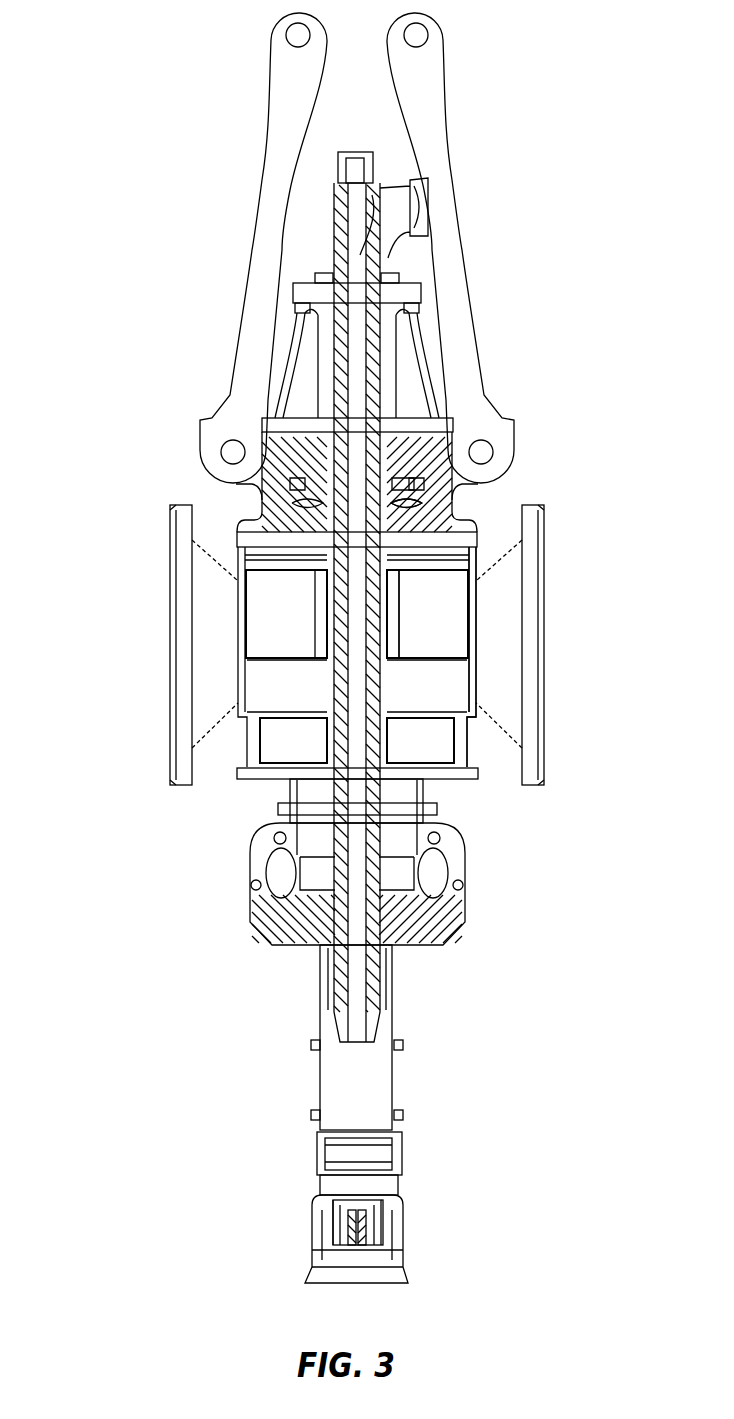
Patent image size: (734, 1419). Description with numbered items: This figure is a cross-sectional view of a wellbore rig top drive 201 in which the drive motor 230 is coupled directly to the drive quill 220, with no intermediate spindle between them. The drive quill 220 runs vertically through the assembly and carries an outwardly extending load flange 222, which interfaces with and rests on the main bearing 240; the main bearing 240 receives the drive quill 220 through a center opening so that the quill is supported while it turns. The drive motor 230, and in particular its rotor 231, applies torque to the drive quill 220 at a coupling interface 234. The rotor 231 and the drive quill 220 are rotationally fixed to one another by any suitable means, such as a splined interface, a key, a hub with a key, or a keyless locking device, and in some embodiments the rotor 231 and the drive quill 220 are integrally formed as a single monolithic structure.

The top drive 201 is at (136, 31).
The drive quill 220 is at (378, 678).
The load flange 222 is at (400, 487).
The drive motor 230 is at (490, 618).
The rotor 231 is at (395, 600).
The coupling interface 234 is at (395, 573).
The main bearing 240 is at (422, 507).